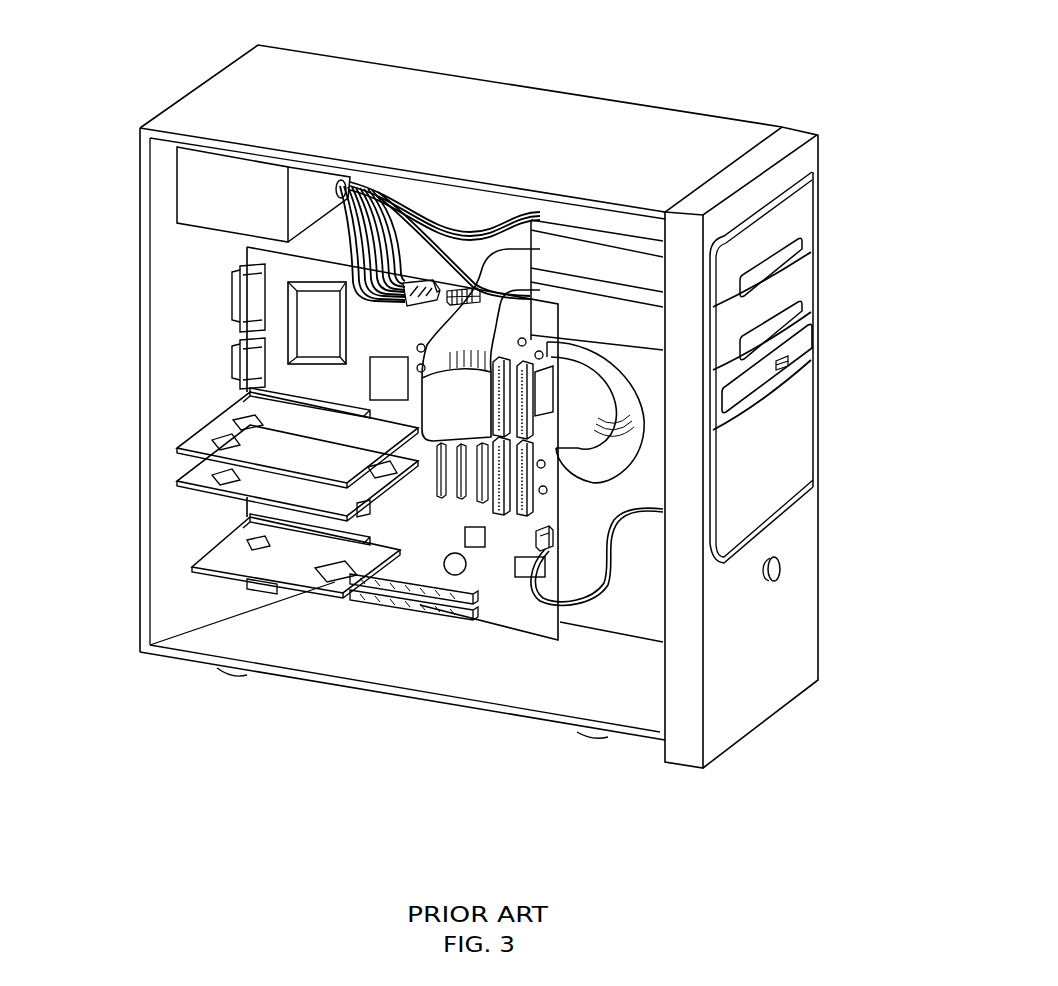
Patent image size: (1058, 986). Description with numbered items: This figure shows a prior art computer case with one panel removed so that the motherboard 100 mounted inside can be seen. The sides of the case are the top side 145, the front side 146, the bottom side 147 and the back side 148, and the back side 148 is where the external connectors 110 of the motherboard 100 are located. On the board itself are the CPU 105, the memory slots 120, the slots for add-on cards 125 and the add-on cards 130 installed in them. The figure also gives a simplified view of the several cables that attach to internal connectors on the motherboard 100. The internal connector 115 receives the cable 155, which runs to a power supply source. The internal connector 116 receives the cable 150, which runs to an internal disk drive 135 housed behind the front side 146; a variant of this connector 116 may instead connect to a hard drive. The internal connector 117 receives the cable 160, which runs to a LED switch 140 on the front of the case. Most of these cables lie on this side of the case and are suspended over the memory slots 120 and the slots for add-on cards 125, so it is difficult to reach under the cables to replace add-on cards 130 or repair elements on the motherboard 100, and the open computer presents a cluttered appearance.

The motherboard 100 is at (513, 630).
The CPU 105 is at (323, 307).
The external connectors 110 is at (232, 307).
The internal connector 115 is at (425, 283).
The internal connector 116 is at (552, 397).
The internal connector 117 is at (556, 536).
The memory slots 120 is at (480, 495).
The slots for add-on cards 125 is at (248, 394).
The add-on cards 130 is at (205, 481).
The internal disk drive 135 is at (802, 236).
The LED switch 140 is at (782, 577).
The top side 145 is at (601, 115).
The front side 146 is at (797, 648).
The bottom side 147 is at (617, 735).
The back side 148 is at (140, 578).
The cable 150 is at (493, 268).
The cable 155 is at (367, 183).
The cable 160 is at (590, 605).